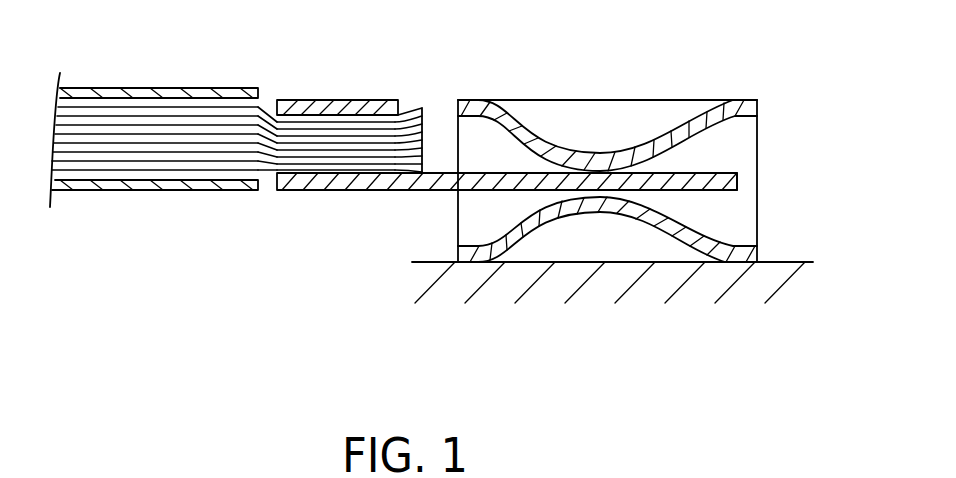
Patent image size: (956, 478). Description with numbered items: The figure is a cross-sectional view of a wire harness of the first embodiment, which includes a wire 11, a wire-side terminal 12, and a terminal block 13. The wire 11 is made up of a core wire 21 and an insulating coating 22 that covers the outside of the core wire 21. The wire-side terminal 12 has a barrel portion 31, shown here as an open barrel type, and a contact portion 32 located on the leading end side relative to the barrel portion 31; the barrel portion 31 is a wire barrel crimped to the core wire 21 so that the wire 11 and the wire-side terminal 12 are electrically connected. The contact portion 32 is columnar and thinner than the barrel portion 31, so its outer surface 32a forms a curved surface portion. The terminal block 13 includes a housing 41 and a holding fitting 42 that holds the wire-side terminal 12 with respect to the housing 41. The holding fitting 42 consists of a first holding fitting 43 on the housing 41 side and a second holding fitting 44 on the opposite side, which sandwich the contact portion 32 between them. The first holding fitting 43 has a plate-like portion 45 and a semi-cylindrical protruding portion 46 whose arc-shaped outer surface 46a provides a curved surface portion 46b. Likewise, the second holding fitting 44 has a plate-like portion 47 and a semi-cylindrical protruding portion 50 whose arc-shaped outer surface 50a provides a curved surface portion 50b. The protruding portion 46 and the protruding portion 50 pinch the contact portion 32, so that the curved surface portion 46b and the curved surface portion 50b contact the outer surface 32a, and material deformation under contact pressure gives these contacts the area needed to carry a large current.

The wire 11 is at (88, 88).
The insulating coating 22 is at (137, 92).
The core wire 21 is at (93, 165).
The wire-side terminal 12 is at (285, 97).
The barrel portion 31 is at (335, 108).
The contact portion 32 is at (737, 182).
The outer surface 32a is at (700, 172).
The terminal block 13 is at (802, 262).
The housing 41 is at (767, 285).
The holding fitting 42 is at (607, 241).
The first holding fitting 43 is at (500, 250).
The second holding fitting 44 is at (500, 98).
The plate-like portion 45 is at (470, 258).
The protruding portion 46 is at (607, 205).
The outer surface 46a is at (538, 197).
The curved surface portion 46b is at (677, 197).
The plate-like portion 47 is at (463, 98).
The protruding portion 50 is at (610, 155).
The outer surface 50a is at (537, 162).
The curved surface portion 50b is at (683, 160).